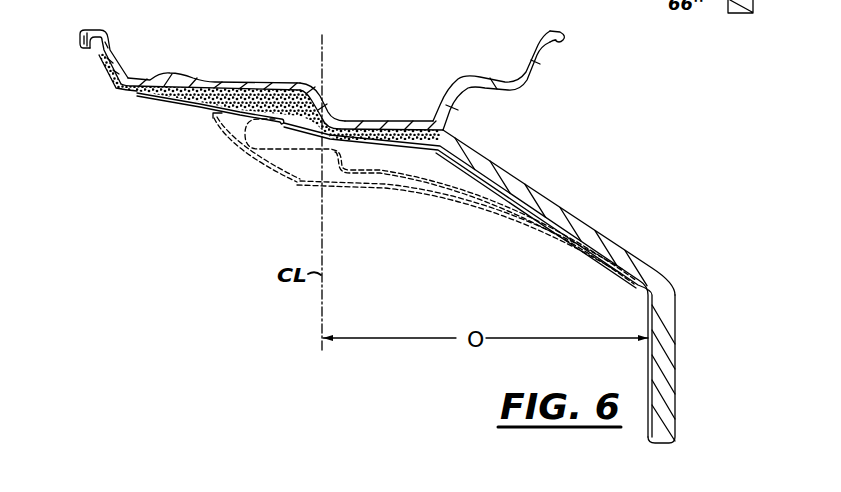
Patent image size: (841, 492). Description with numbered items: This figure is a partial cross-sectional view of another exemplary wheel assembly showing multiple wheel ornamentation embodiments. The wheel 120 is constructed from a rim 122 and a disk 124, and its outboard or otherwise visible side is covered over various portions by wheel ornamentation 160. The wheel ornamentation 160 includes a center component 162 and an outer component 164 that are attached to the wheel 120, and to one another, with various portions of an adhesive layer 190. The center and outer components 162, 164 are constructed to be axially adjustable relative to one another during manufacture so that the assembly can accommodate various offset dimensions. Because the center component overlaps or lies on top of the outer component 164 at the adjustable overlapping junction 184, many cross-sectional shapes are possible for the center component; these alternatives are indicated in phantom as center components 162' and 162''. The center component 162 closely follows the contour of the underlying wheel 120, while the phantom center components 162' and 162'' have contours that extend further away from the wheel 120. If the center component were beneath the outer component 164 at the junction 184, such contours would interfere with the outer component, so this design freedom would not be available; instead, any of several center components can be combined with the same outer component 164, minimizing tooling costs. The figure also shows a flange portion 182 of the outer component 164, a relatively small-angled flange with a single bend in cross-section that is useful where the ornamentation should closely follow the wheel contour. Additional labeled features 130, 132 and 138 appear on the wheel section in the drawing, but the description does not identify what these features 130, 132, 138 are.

The wheel 120 is at (173, 66).
The rim 122 is at (312, 86).
The disk 124 is at (553, 213).
The right bead flange hook 130 is at (561, 41).
The left bead flange hook 132 is at (102, 38).
The rim leg / lip 138 is at (678, 320).
The wheel ornamentation 160 is at (181, 106).
The center component 162 is at (468, 280).
The center component 162' is at (441, 201).
The center component 162'' is at (441, 227).
The outer component 164 is at (127, 92).
The flange portion 182 is at (323, 103).
The adjustable overlapping junction 184 is at (247, 169).
The adhesive layer 190 is at (262, 100).